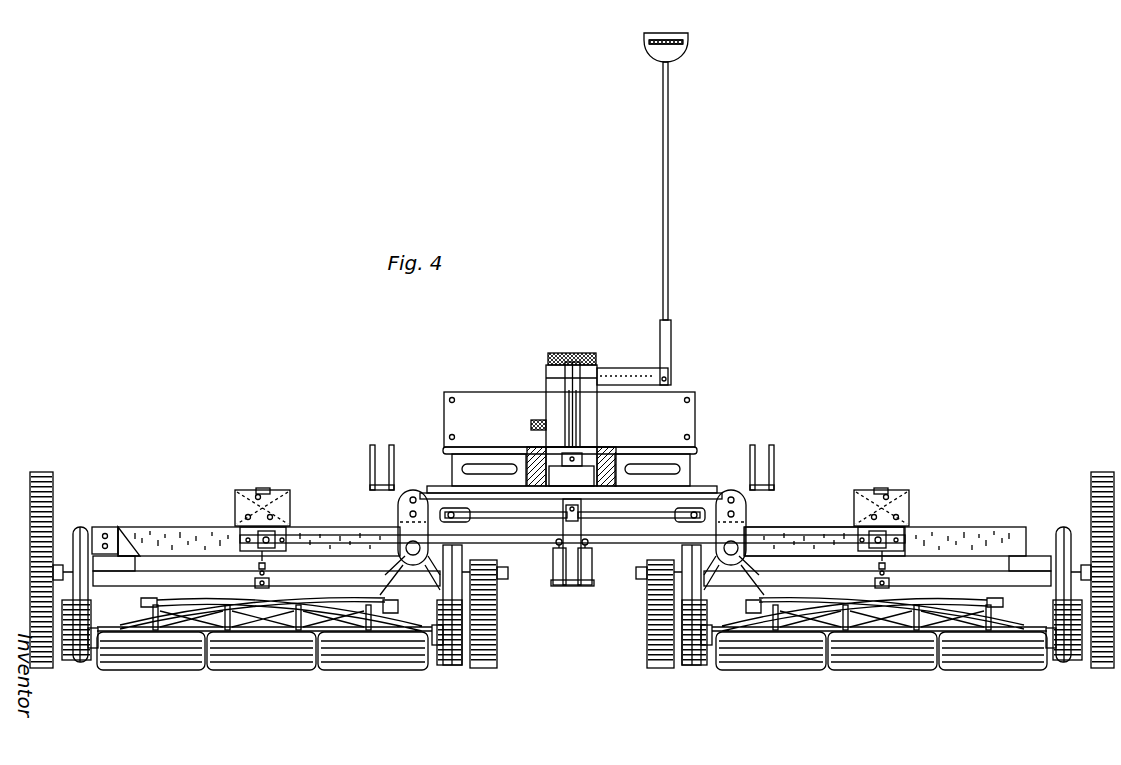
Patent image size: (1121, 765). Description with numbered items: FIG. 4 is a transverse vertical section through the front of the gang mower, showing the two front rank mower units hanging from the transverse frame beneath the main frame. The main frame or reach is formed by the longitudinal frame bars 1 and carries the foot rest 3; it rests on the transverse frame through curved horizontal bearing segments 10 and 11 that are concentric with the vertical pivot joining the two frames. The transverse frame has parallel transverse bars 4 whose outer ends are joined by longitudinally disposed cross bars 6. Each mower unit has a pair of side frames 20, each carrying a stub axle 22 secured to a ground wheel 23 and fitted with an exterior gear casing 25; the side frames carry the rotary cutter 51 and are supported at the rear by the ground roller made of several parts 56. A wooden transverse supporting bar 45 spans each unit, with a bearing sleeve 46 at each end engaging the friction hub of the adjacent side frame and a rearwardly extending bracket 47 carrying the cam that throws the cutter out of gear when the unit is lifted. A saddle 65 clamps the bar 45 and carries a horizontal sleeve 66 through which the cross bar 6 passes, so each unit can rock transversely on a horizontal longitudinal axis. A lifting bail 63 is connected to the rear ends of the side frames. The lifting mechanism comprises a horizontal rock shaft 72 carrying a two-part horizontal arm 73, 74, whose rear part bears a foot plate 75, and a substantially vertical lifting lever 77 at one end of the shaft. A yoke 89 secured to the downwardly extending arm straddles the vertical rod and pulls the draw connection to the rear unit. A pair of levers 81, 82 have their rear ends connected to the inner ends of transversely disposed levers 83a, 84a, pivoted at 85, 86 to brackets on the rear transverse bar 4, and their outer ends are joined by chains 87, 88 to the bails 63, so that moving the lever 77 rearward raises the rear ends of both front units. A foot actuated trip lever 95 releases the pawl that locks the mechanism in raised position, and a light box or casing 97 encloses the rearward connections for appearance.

The longitudinal frame bar 1 is at (532, 463).
The foot rest 3 is at (682, 410).
The transverse bar 4 is at (847, 497).
The cross bar 6 is at (270, 490).
The horizontal bearing segment 10 is at (674, 488).
The horizontal bearing segment 11 is at (699, 497).
The side frame 20 is at (93, 650).
The stub axle 22 is at (55, 568).
The ground wheel 23 is at (42, 670).
The gear casing 25 is at (76, 661).
The transverse supporting bar 45 is at (142, 527).
The bearing sleeve 46 is at (102, 527).
The bracket 47 is at (124, 530).
The rotary cutter 51 is at (345, 612).
The ground roller part 56 is at (335, 660).
The lifting bail 63 is at (572, 569).
The saddle 65 is at (243, 535).
The horizontal sleeve 66 is at (250, 490).
The rock shaft 72 is at (622, 370).
The horizontal arm part 73 is at (571, 412).
The horizontal arm part 74 is at (569, 341).
The foot plate 75 is at (578, 382).
The lifting lever 77 is at (671, 202).
The lever 81 is at (556, 573).
The lever 82 is at (592, 573).
The transversely disposed lever 83a is at (517, 526).
The transversely disposed lever 84a is at (628, 526).
The pivot 85 is at (410, 528).
The pivot 86 is at (740, 520).
The chain 87 is at (255, 566).
The chain 88 is at (879, 575).
The yoke 89 is at (578, 456).
The foot actuated trip lever 95 is at (532, 422).
The light box or casing 97 is at (385, 470).